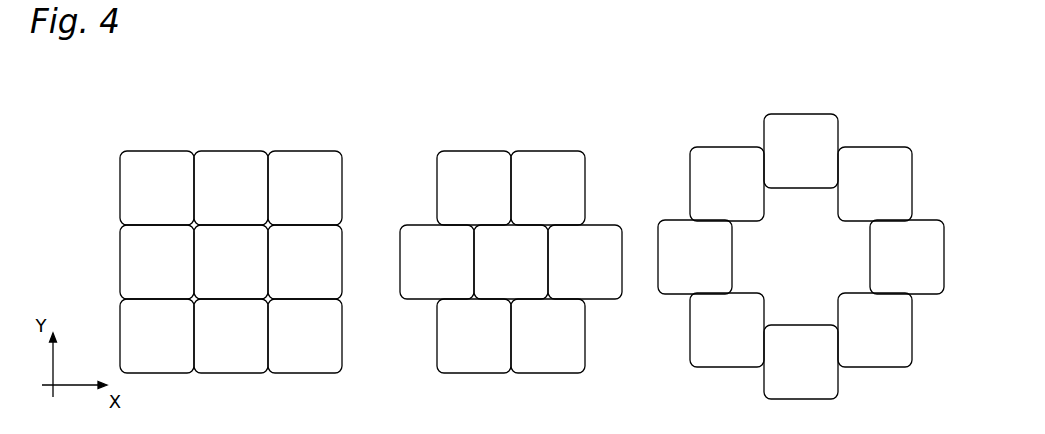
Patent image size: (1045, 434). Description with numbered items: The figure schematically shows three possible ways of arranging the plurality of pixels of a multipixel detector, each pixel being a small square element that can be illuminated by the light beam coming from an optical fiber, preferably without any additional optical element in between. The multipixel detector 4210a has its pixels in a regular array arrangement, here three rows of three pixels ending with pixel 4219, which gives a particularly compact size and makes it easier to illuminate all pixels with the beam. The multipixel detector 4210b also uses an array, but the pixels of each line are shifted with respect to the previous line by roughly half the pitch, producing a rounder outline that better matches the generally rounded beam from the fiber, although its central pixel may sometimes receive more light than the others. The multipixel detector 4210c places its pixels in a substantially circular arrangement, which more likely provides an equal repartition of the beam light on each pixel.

The multipixel detector 4210a is at (295, 59).
The multipixel detector 4210b is at (559, 59).
The multipixel detector 4210c is at (877, 58).
The pixel 4219 is at (305, 336).